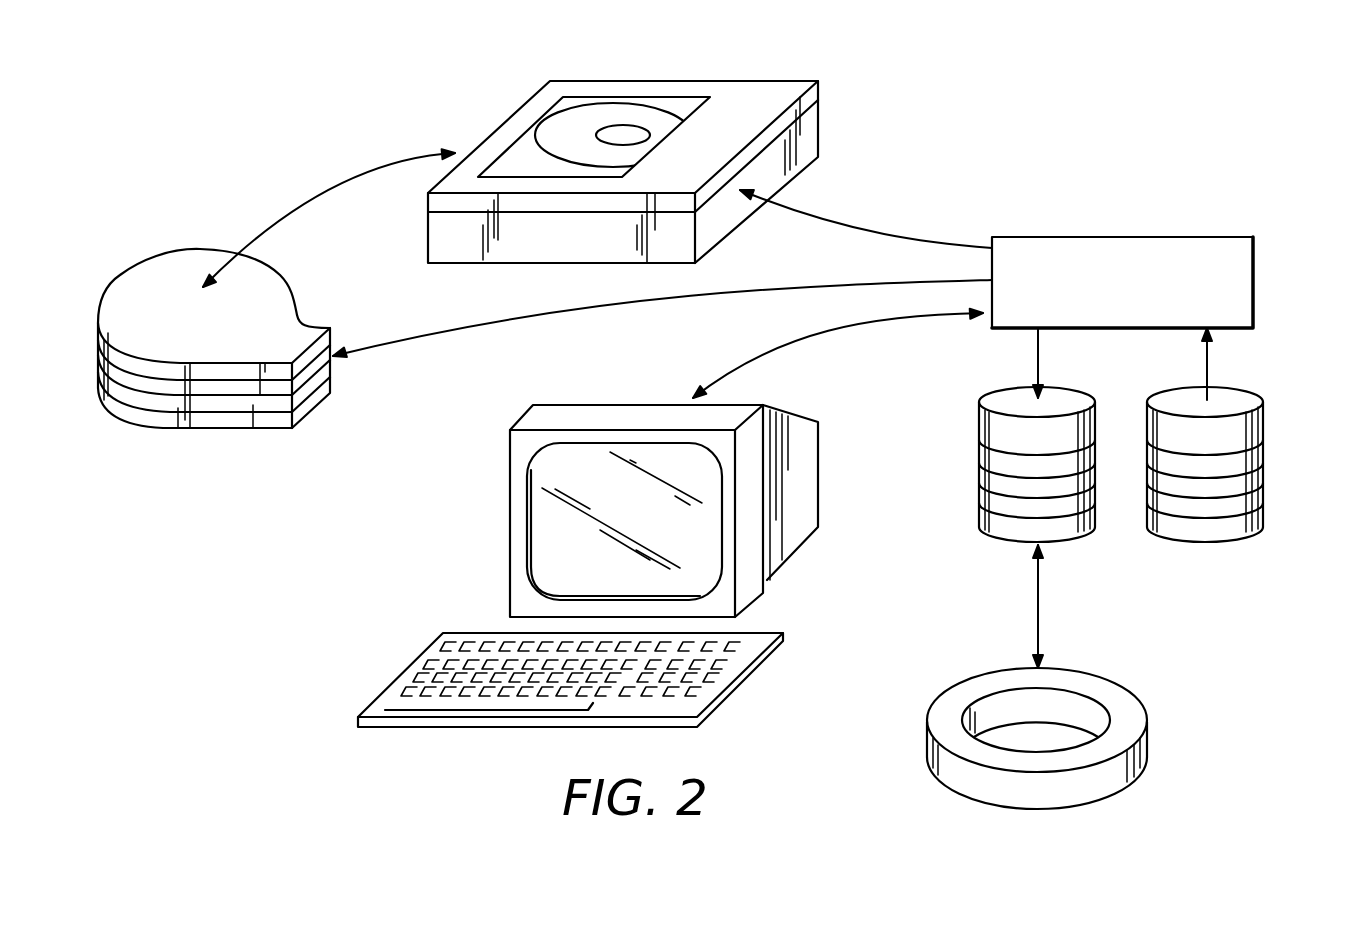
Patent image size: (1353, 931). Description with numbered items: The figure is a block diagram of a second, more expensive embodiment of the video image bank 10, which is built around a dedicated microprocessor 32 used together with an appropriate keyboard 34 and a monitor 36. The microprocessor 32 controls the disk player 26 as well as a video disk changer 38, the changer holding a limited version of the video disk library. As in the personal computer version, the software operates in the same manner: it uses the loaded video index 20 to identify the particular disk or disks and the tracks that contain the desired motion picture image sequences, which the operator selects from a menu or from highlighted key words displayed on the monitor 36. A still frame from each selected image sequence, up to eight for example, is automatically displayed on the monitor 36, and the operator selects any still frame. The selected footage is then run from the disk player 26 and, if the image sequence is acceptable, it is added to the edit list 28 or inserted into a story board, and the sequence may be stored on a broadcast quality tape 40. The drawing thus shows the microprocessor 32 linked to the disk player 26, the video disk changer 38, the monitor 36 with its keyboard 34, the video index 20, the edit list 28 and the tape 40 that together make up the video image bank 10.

The video image bank 10 is at (327, 546).
The video index 20 is at (1263, 480).
The disk player 26 is at (610, 78).
The edit list 28 is at (980, 468).
The microprocessor 32 is at (1118, 237).
The keyboard 34 is at (422, 654).
The monitor 36 is at (508, 468).
The video disk changer 38 is at (203, 250).
The broadcast quality tape 40 is at (1145, 748).